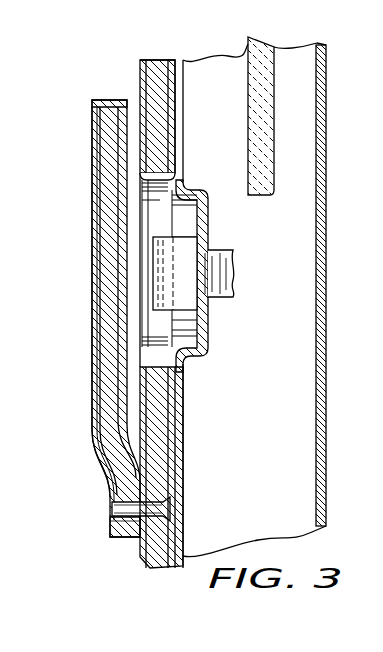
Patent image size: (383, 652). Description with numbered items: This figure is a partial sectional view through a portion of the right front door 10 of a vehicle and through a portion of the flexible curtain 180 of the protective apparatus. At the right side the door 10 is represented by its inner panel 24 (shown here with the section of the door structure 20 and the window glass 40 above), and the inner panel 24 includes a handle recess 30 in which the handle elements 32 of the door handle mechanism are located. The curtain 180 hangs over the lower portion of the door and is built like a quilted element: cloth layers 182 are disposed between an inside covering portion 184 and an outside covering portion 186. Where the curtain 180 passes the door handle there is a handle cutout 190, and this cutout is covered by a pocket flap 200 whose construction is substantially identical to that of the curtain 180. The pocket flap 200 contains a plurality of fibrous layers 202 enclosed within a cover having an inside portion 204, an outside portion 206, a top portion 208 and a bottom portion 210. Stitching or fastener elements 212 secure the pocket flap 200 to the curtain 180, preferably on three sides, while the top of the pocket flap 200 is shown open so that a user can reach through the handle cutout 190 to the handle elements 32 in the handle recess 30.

The right front door 10 is at (332, 215).
The structure wall 20 is at (327, 332).
The inner panel 24 is at (184, 456).
The handle recess 30 is at (198, 332).
The handle elements 32 is at (218, 260).
The window glass 40 is at (276, 46).
The flexible curtain 180 is at (144, 52).
The cloth layers 182 is at (160, 68).
The inside covering portion 184 is at (176, 60).
The outside covering portion 186 is at (140, 78).
The handle cutout 190 is at (178, 178).
The pocket flap 200 is at (86, 172).
The fibrous layers 202 is at (102, 300).
The inside portion 204 is at (118, 209).
The outside portion 206 is at (100, 255).
The top portion 208 is at (96, 100).
The bottom portion 210 is at (114, 537).
The stitching or fastener elements 212 is at (112, 508).